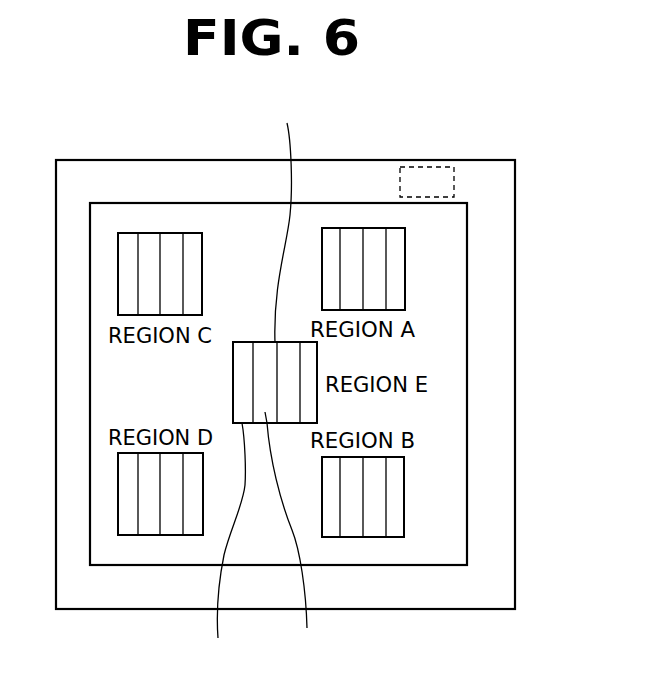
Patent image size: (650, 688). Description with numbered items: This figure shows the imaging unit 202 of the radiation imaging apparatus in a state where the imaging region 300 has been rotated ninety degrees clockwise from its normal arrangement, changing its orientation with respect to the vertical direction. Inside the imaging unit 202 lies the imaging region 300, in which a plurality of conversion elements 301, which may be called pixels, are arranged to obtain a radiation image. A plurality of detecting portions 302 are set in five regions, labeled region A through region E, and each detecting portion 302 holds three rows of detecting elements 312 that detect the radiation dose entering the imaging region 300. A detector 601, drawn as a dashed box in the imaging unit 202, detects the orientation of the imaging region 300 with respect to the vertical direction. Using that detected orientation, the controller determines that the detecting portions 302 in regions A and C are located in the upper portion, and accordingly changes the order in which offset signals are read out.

The imaging unit 202 is at (90, 159).
The imaging region 300 is at (443, 565).
The detector 601 is at (423, 167).
The detecting element 312 is at (287, 218).
The conversion element 301 is at (297, 537).
The detecting portion 302 is at (219, 548).